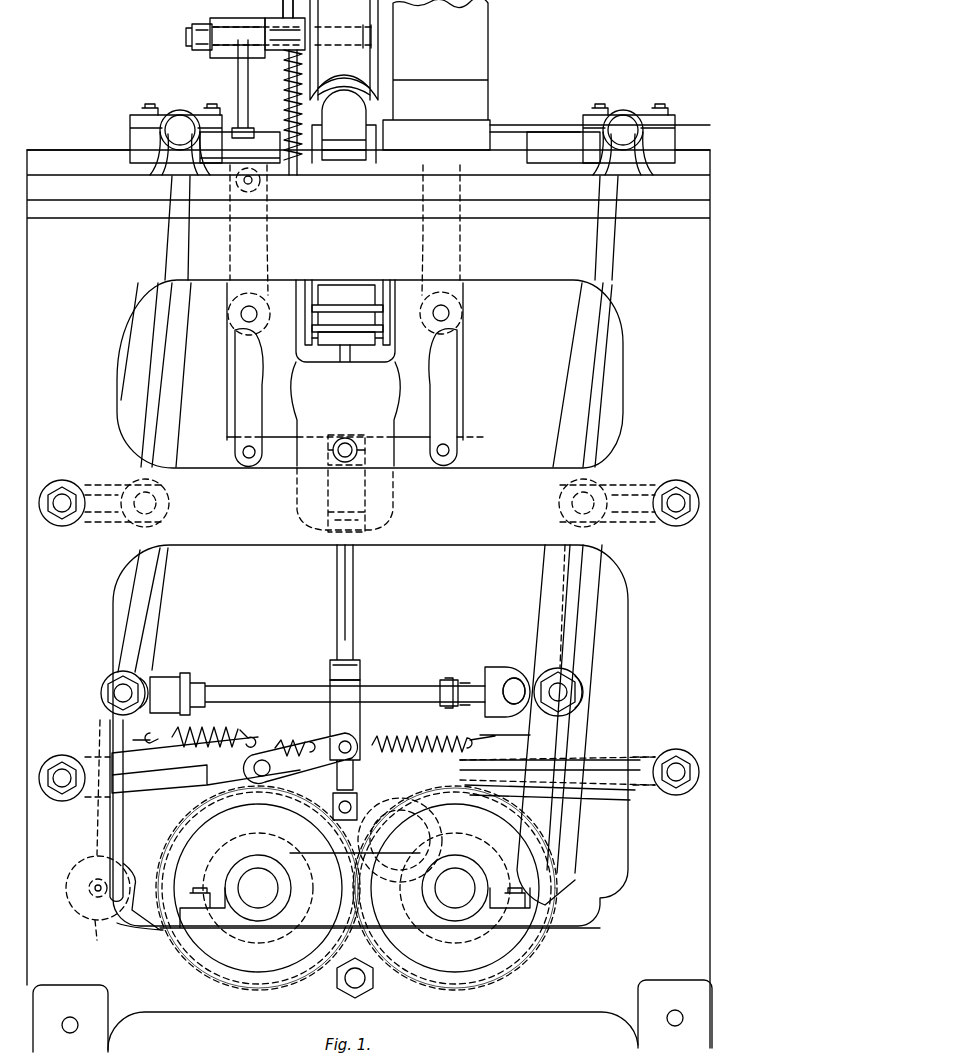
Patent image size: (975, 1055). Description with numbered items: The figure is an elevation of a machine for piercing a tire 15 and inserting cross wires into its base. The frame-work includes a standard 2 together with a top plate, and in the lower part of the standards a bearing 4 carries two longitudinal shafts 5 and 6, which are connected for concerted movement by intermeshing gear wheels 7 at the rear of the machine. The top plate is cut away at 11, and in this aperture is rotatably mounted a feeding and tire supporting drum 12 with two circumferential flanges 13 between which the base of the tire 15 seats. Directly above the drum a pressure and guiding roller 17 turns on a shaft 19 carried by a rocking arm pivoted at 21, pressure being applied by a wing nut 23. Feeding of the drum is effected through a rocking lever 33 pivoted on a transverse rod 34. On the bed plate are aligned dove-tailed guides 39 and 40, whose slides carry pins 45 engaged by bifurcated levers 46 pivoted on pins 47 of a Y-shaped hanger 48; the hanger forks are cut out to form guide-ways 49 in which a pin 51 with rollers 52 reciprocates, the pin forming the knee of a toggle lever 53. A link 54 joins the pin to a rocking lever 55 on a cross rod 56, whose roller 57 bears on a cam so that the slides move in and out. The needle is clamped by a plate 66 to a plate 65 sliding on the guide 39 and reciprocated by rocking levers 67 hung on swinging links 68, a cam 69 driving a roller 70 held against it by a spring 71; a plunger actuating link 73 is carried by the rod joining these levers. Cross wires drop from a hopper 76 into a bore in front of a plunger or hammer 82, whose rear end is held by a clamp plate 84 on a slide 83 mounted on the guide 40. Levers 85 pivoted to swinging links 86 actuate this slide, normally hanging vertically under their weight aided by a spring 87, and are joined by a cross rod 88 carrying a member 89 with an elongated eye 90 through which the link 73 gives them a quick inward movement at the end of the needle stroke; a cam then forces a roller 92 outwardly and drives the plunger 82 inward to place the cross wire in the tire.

The standard 2 is at (700, 427).
The bearing 4 is at (380, 890).
The longitudinal shaft 5 is at (262, 900).
The longitudinal shaft 6 is at (462, 900).
The intermeshing gear wheel 7 is at (300, 800).
The cut-away aperture 11 is at (320, 300).
The feeding and tire supporting drum 12 is at (358, 338).
The circumferential flange 13 is at (305, 340).
The tire 15 is at (344, 81).
The pressure and guiding roller 17 is at (356, 42).
The shaft 19 is at (340, 25).
The pivot 21 is at (188, 33).
The wing nut 23 is at (282, 5).
The rocking lever 33 is at (590, 805).
The transverse rod 34 is at (690, 772).
The dove-tailed guide 39 is at (95, 162).
The dove-tailed guide 40 is at (695, 158).
The pin 45 is at (234, 181).
The lever 46 is at (242, 390).
The pin 47 is at (244, 318).
The Y-shaped hanger 48 is at (346, 447).
The guide-way 49 is at (352, 438).
The pin 51 is at (333, 449).
The roller 52 is at (358, 449).
The toggle lever 53 is at (280, 462).
The link 54 is at (355, 615).
The rocking lever 55 is at (206, 765).
The cross rod 56 is at (64, 788).
The roller 57 is at (270, 740).
The plate 65 is at (240, 147).
The clamp plate 66 is at (135, 122).
The rocking lever 67 is at (176, 372).
The swinging link 68 is at (100, 520).
The cam 69 is at (148, 890).
The roller 70 is at (122, 915).
The spring 71 is at (225, 735).
The plunger actuating link 73 is at (272, 685).
The cross wire hopper 76 is at (436, 75).
The plunger or hammer 82 is at (520, 123).
The slide 83 is at (542, 140).
The clamp plate 84 is at (650, 115).
The lever 85 is at (575, 400).
The swinging link 86 is at (635, 487).
The spring 87 is at (400, 740).
The cross rod 88 is at (582, 688).
The member 89 is at (500, 675).
The elongated eye 90 is at (517, 680).
The roller 92 is at (562, 895).